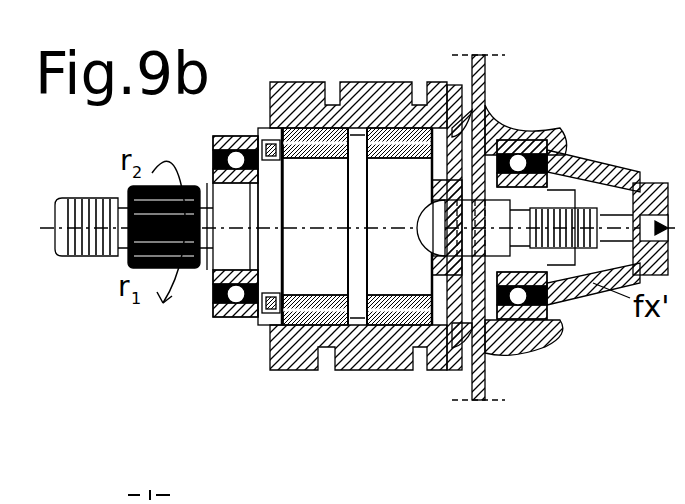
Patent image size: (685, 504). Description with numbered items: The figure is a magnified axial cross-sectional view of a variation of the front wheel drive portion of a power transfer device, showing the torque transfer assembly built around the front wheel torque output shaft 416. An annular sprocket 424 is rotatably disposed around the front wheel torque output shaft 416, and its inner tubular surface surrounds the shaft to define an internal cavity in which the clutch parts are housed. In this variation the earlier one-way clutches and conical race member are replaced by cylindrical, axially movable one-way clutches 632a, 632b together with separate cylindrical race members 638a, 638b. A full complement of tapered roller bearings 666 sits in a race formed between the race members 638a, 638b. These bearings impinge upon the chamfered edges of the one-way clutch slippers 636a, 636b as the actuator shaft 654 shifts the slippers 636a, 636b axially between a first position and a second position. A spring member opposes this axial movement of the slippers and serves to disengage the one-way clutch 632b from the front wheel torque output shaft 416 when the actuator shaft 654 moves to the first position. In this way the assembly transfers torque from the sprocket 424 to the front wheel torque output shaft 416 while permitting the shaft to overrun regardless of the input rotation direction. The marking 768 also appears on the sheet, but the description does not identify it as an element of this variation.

The front wheel torque output shaft 416 is at (90, 197).
The annular sprocket 424 is at (368, 100).
The one-way clutch 632a is at (457, 127).
The one-way clutch 632b is at (317, 123).
The one-way clutch slipper 636a is at (445, 365).
The one-way clutch slipper 636b is at (285, 360).
The cylindrical race member 638a is at (388, 277).
The cylindrical race member 638b is at (307, 270).
The actuator shaft 654 is at (483, 327).
The tapered roller bearings 666 is at (357, 292).
The reference 768 is at (63, 485).